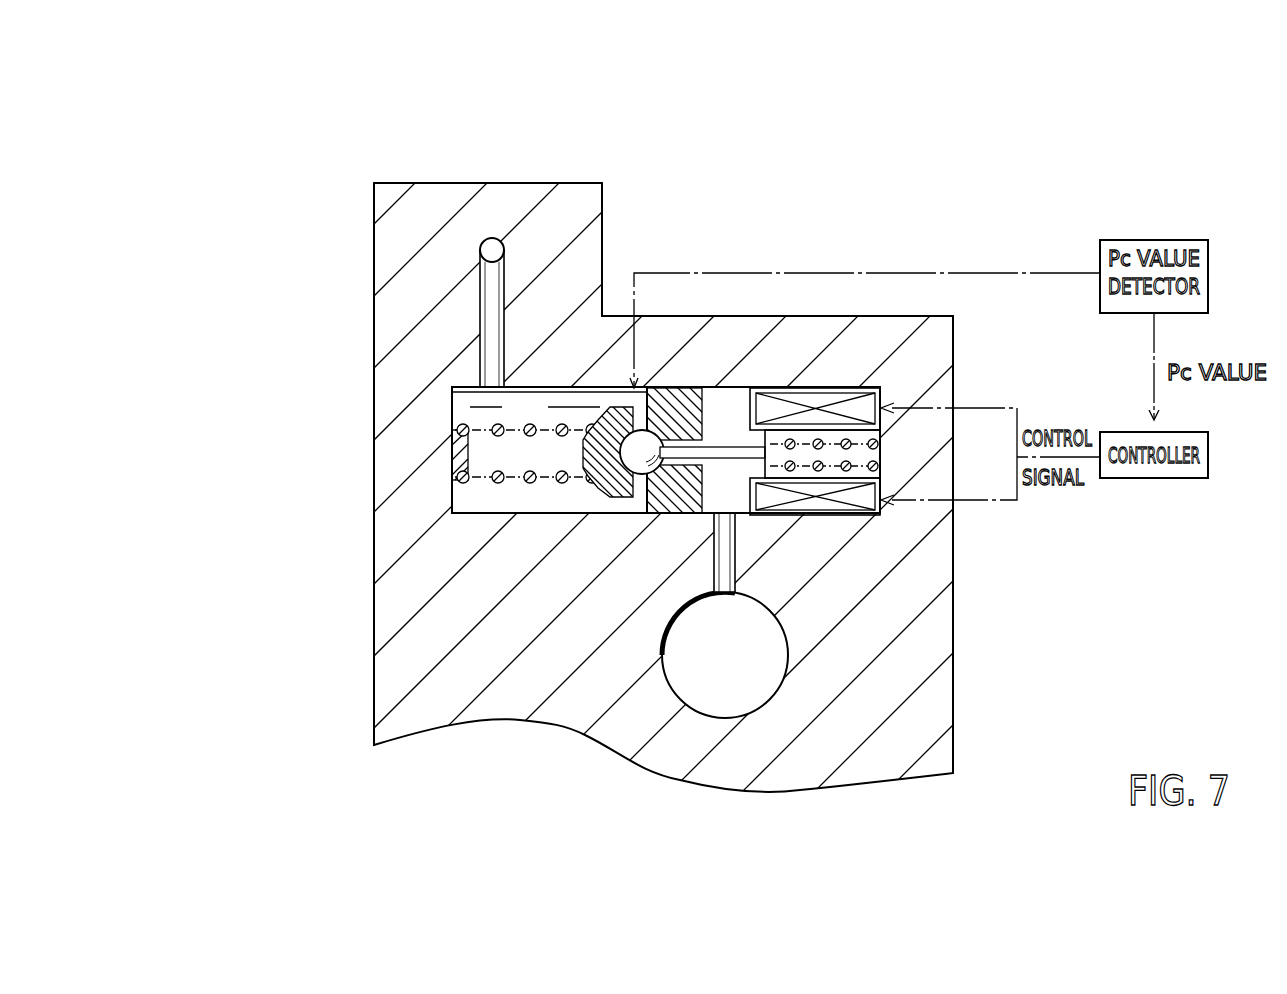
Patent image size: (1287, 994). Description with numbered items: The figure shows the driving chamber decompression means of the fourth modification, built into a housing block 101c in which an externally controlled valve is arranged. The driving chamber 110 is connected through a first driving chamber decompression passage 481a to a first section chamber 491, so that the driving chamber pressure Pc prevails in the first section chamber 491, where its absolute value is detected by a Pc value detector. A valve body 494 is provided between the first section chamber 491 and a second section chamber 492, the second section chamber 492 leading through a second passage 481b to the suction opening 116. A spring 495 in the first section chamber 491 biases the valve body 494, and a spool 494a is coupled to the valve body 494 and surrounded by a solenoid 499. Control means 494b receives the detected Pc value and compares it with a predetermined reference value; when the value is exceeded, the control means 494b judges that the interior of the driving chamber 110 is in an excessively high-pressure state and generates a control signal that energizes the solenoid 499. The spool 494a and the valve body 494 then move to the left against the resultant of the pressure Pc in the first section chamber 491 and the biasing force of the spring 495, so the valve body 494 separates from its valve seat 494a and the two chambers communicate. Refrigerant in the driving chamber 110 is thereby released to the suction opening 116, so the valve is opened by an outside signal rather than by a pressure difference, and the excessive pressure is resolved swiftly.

The housing block 101c is at (580, 160).
The driving chamber 110 is at (492, 238).
The first driving chamber decompression passage 481a is at (480, 290).
The passage to suction chamber 481b is at (717, 562).
The first section chamber 491 is at (468, 495).
The second section chamber 492 is at (730, 400).
The valve body 494 is at (620, 405).
The spool 494a is at (680, 395).
The control means 494b is at (737, 455).
The spring 495 is at (485, 425).
The solenoid 499 is at (823, 400).
The suction opening 116 is at (700, 672).